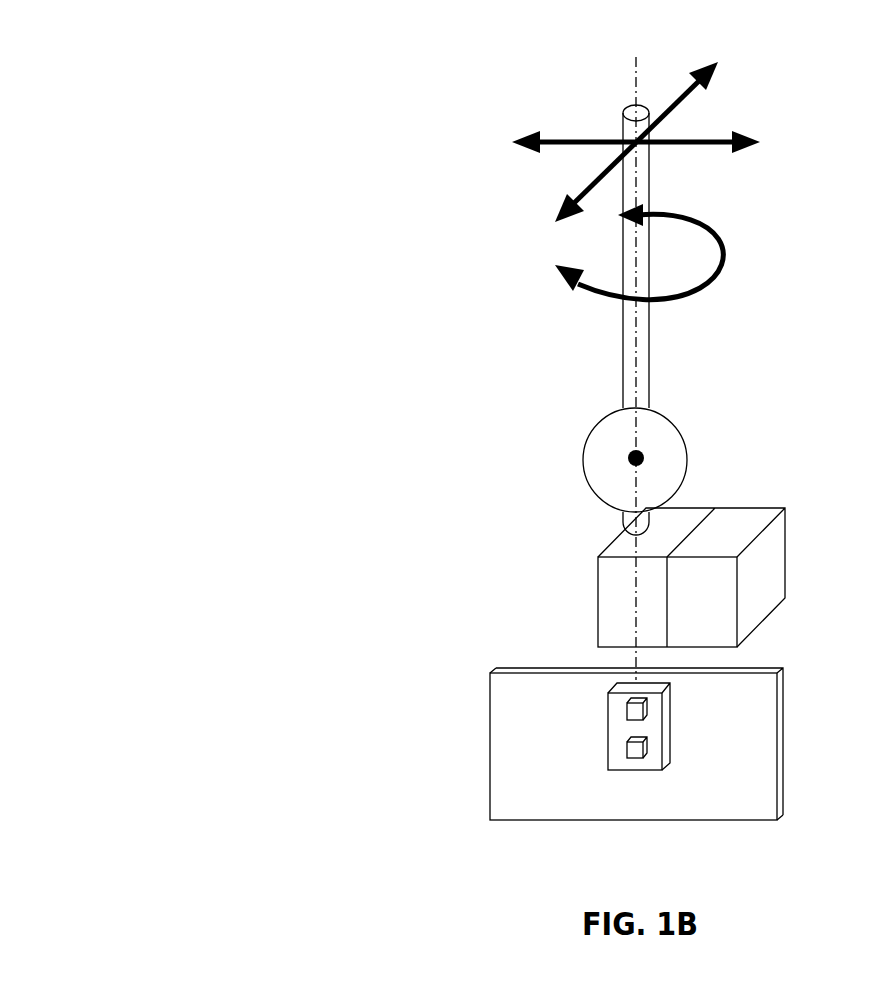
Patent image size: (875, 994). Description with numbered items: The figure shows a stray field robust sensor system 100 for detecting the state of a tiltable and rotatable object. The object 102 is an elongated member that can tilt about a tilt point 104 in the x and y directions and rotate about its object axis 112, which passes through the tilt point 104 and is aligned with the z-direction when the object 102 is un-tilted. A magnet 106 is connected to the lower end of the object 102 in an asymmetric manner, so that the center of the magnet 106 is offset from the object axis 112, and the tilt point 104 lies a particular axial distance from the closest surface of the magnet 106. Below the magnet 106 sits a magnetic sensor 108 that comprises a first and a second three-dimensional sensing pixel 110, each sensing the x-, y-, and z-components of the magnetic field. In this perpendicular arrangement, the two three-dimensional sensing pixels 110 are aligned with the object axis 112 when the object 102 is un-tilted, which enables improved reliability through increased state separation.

The stray field robust sensor system 100 is at (142, 36).
The object 102 is at (623, 355).
The tilt point 104 is at (644, 458).
The magnet 106 is at (608, 568).
The magnetic sensor 108 is at (607, 713).
The 3D sensing pixel 110 is at (646, 752).
The object axis 112 is at (649, 352).